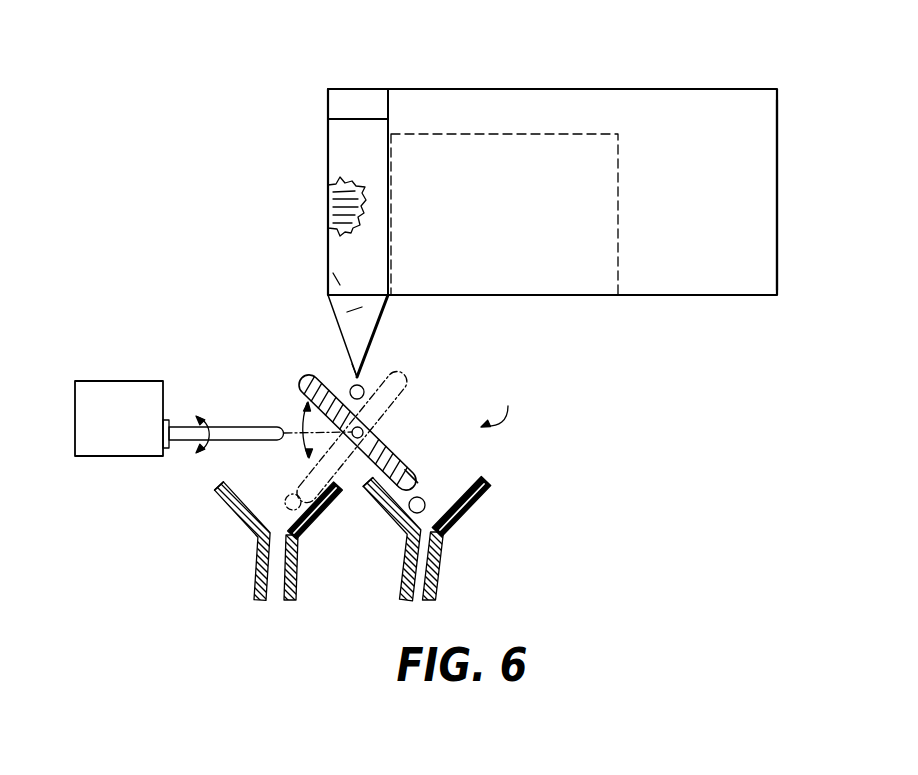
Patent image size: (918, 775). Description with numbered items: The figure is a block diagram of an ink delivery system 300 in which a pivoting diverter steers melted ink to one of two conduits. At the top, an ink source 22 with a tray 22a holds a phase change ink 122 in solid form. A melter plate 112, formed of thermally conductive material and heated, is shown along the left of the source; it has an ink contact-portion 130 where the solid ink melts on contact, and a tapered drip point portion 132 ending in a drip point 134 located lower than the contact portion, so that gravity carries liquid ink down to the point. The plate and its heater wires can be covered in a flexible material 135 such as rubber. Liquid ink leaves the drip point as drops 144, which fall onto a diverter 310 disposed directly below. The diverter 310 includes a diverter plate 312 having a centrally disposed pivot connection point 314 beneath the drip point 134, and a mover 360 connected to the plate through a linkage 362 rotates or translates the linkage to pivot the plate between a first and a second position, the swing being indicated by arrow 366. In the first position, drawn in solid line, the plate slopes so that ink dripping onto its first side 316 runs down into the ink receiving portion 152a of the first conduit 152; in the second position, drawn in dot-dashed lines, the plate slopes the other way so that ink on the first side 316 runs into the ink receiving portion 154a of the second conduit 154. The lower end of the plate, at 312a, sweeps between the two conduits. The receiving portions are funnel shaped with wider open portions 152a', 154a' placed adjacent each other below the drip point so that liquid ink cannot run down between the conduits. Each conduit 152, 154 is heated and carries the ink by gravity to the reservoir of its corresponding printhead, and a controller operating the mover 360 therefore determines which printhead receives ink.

The ink delivery system 300 is at (207, 66).
The ink source 22 is at (743, 86).
The tray 22a is at (770, 155).
The melter plate 112 is at (356, 116).
The cyan solid phase change ink 122 is at (486, 224).
The ink contact-portion 130 is at (327, 204).
The drip point portion 132 is at (338, 335).
The drip point 134 is at (361, 376).
The flexible material 135 is at (350, 308).
The drops of liquid ink 144 is at (366, 387).
The mover 360 is at (100, 429).
The linkage 362 is at (236, 431).
The arrow 366 is at (300, 428).
The diverter plate 312 is at (306, 385).
The pivot connection point 314 is at (364, 428).
The blade end 312a is at (410, 486).
The first side of diverter plate 316 is at (300, 464).
The diverter 310 is at (504, 403).
The second conduit 154 is at (255, 565).
The second conduit ink receiving portion 154a is at (205, 511).
The open portion 154a' is at (234, 504).
The first conduit 152 is at (447, 575).
The first conduit ink receiving portion 152a is at (501, 509).
The open portion 152a' is at (471, 483).